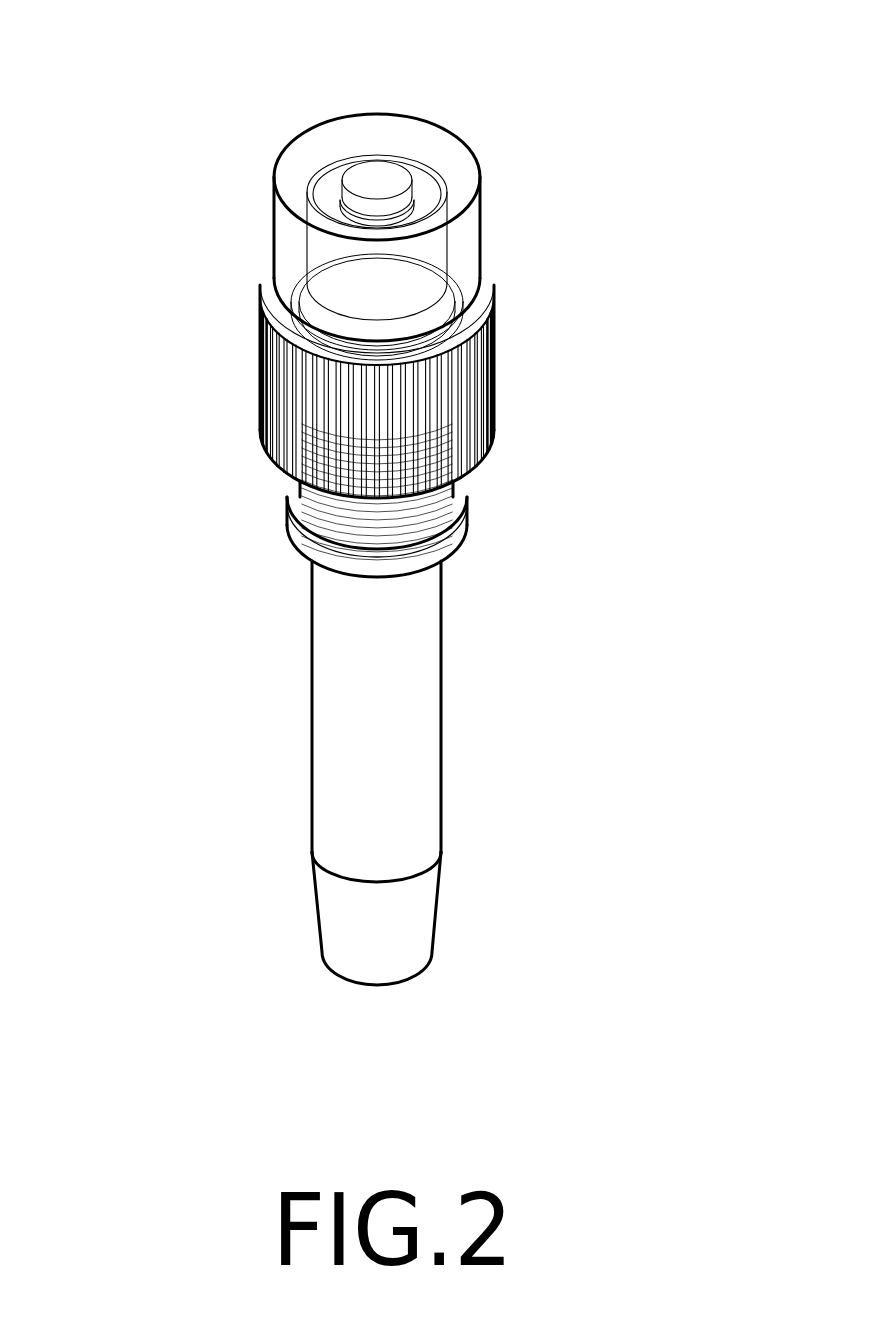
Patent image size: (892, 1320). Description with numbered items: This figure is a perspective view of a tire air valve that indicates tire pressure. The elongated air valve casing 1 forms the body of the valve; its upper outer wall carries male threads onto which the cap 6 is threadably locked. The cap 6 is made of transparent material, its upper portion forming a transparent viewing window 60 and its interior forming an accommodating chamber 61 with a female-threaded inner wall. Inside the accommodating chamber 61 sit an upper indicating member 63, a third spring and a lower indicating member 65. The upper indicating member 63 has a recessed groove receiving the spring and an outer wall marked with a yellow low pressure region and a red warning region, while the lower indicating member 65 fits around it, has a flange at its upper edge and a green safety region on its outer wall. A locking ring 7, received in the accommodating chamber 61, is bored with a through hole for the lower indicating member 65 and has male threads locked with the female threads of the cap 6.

The air valve casing 1 is at (443, 740).
The cap 6 is at (497, 390).
The transparent viewing window 60 is at (463, 243).
The accommodating chamber 61 is at (318, 240).
The upper indicating member 63 is at (380, 178).
The lower indicating member 65 is at (355, 268).
The locking ring 7 is at (327, 311).